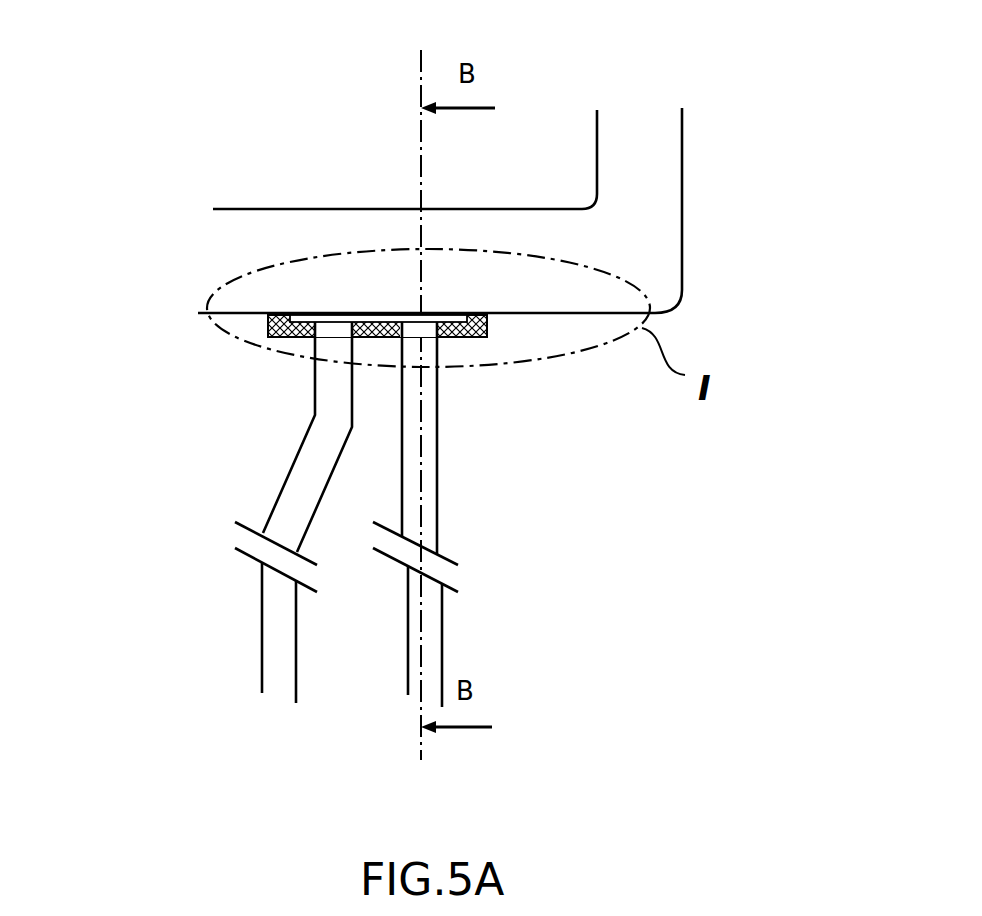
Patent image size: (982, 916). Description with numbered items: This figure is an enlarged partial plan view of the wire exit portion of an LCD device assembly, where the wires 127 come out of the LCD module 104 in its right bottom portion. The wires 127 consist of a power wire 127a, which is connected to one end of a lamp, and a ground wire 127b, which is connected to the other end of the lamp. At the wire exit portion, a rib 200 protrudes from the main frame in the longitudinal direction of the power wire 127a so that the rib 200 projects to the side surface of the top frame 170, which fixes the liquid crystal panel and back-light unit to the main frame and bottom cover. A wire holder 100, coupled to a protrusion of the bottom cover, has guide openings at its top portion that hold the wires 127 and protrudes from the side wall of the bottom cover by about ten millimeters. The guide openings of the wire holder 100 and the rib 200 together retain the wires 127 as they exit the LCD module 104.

The LCD module 104 is at (790, 62).
The top frame 170 is at (665, 148).
The wire holder 100 is at (483, 328).
The rib 200 is at (455, 337).
The wires 127 is at (247, 514).
The power wire 127a is at (410, 472).
The ground wire 127b is at (323, 405).